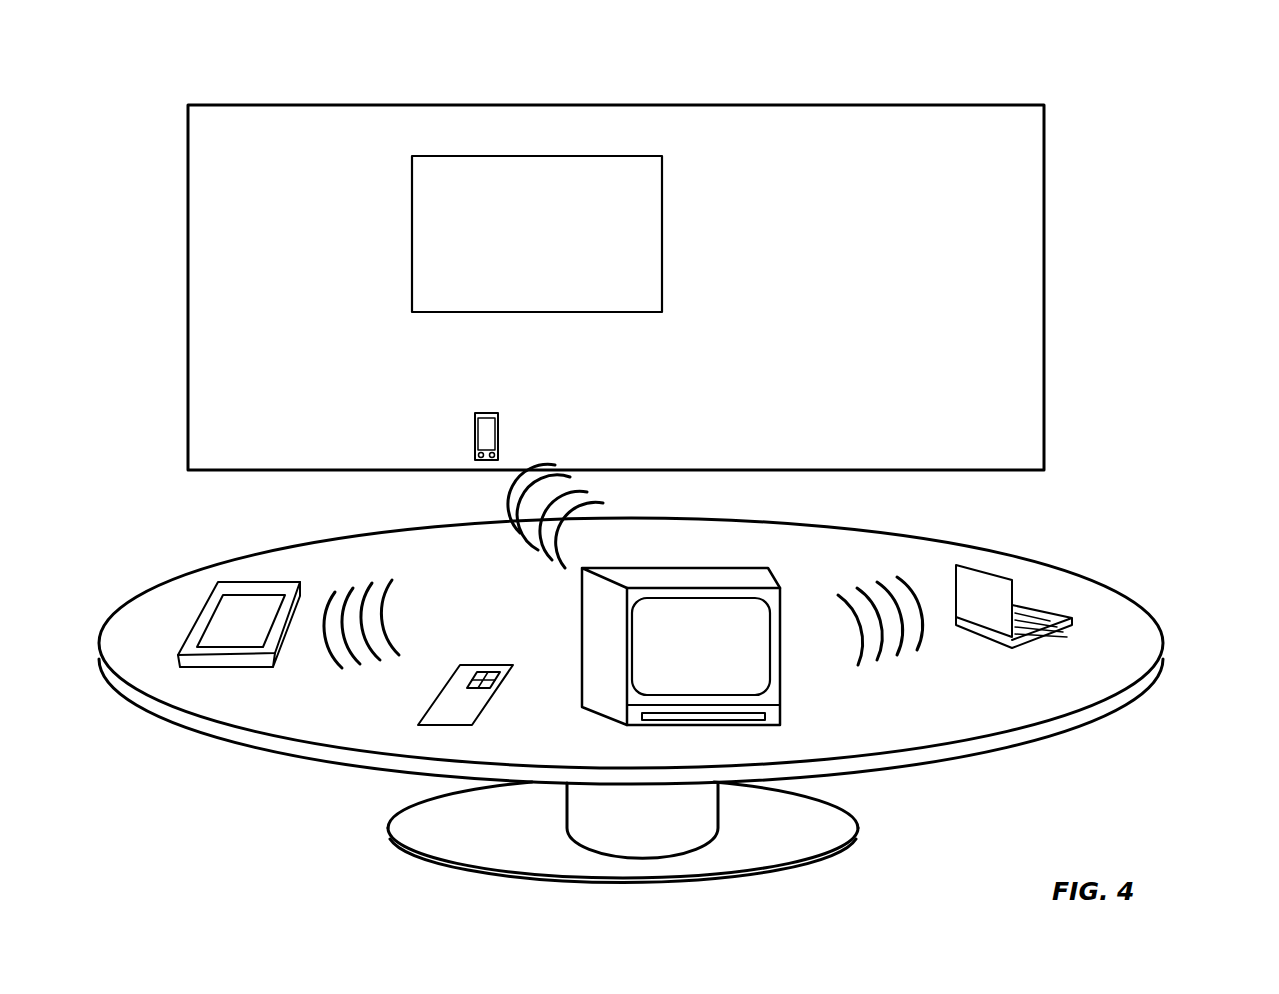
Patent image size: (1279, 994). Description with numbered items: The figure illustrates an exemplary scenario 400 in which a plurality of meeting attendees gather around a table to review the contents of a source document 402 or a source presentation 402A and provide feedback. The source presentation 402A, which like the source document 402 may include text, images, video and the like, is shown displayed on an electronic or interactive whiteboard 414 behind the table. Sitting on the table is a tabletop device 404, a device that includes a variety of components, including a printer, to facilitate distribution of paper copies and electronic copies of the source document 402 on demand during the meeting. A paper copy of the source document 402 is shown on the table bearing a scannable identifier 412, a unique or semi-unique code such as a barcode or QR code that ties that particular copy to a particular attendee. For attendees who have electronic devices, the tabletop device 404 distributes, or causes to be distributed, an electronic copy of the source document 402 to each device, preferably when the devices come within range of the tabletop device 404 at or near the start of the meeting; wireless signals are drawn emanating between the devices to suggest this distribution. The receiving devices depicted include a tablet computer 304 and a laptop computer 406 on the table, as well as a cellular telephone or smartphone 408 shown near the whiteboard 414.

The exemplary scenario 400 is at (1116, 126).
The electronic or interactive whiteboard 414 is at (1046, 290).
The source presentation 402A is at (662, 248).
The cellular telephone or smartphone 408 is at (499, 413).
The tablet computer 304 is at (290, 586).
The source document 402 is at (455, 713).
The scannable identifier 412 is at (483, 670).
The tabletop device 404 is at (720, 587).
The laptop computer 406 is at (992, 575).